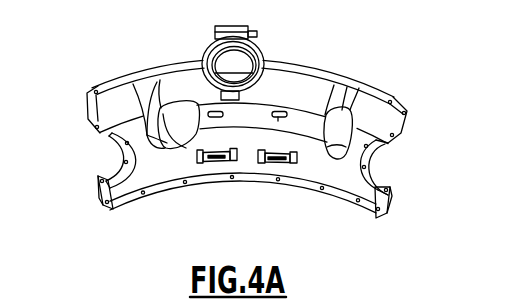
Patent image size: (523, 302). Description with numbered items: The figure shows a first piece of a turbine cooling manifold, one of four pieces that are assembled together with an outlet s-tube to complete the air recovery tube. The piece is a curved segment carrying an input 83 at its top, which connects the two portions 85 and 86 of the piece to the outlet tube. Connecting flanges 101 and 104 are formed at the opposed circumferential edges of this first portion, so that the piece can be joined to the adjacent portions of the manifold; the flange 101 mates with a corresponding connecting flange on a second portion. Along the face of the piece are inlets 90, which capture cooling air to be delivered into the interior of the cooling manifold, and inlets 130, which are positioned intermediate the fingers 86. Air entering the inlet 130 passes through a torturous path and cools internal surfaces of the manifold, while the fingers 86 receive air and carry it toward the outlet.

The input 83 is at (262, 58).
The portion 85 is at (172, 88).
The fingers 86 is at (317, 88).
The inlets 90 is at (216, 152).
The connecting flange 101 is at (92, 132).
The connecting flange 104 is at (403, 122).
The inlets 130 is at (278, 158).